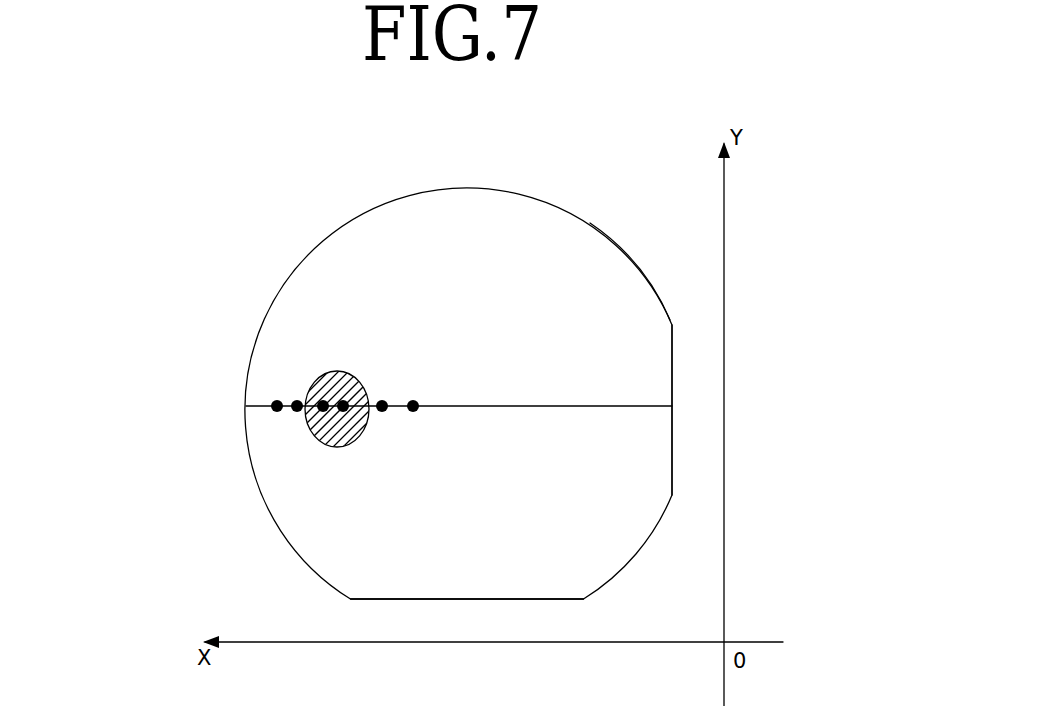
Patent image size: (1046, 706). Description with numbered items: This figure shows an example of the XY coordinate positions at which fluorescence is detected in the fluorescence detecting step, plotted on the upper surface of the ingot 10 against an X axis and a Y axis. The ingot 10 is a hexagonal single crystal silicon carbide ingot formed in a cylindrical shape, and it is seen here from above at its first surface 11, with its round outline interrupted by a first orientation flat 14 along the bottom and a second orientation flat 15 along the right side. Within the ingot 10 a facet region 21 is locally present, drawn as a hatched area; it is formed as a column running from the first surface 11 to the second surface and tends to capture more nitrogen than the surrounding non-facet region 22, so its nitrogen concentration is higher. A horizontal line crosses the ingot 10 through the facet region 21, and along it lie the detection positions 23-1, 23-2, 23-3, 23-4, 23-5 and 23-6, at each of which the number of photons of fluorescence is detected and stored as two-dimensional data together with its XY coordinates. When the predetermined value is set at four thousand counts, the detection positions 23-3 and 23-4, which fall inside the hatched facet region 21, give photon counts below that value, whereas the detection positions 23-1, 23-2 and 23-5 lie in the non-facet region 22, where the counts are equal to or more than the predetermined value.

The ingot 10 is at (597, 217).
The first surface 11 is at (627, 288).
The first orientation flat 14 is at (465, 599).
The second orientation flat 15 is at (672, 382).
The facet region 21 is at (327, 427).
The non-facet region 22 is at (416, 207).
The detection position 23-1 is at (273, 402).
The detection position 23-2 is at (295, 402).
The detection position 23-3 is at (322, 403).
The detection position 23-4 is at (343, 403).
The detection position 23-5 is at (382, 403).
The measurement point 23-6 is at (413, 403).